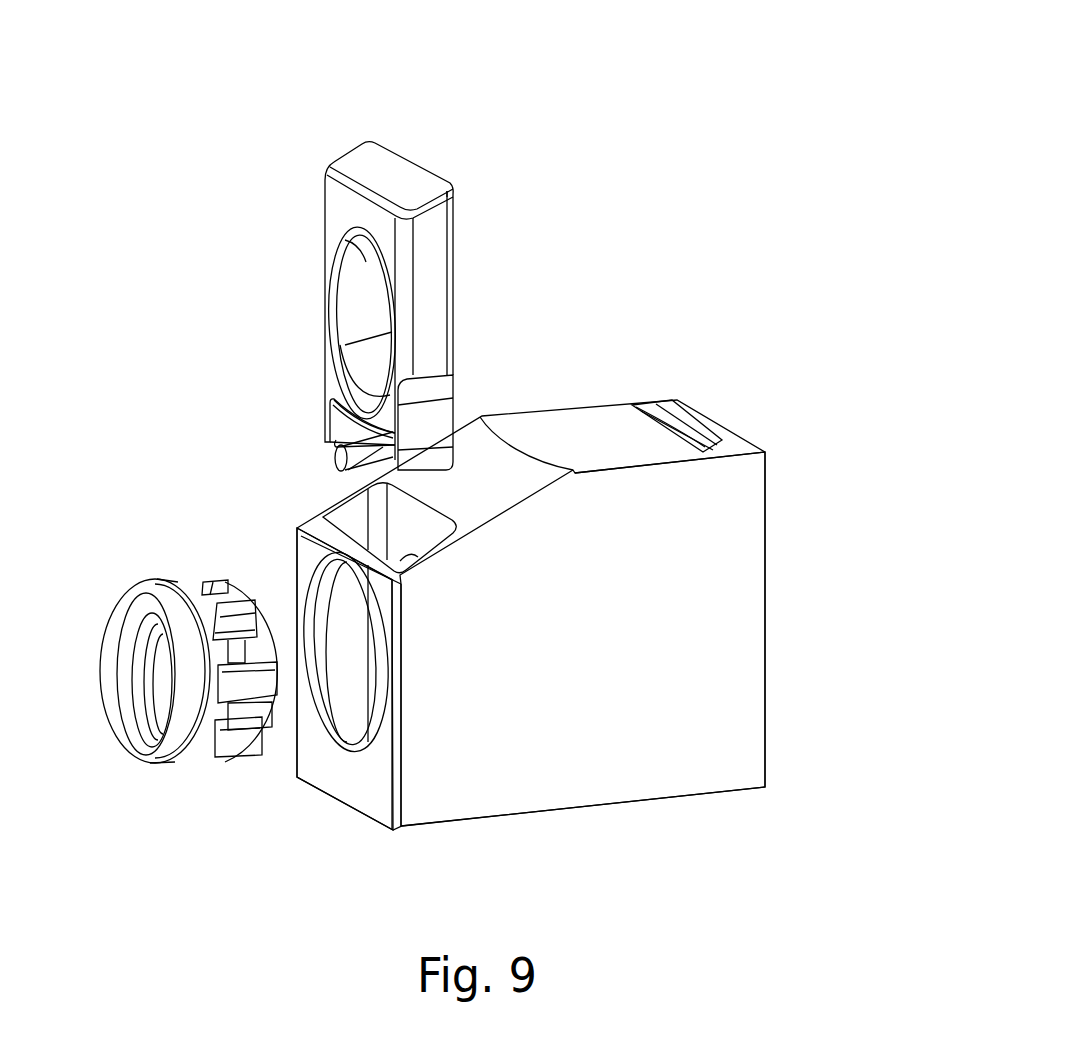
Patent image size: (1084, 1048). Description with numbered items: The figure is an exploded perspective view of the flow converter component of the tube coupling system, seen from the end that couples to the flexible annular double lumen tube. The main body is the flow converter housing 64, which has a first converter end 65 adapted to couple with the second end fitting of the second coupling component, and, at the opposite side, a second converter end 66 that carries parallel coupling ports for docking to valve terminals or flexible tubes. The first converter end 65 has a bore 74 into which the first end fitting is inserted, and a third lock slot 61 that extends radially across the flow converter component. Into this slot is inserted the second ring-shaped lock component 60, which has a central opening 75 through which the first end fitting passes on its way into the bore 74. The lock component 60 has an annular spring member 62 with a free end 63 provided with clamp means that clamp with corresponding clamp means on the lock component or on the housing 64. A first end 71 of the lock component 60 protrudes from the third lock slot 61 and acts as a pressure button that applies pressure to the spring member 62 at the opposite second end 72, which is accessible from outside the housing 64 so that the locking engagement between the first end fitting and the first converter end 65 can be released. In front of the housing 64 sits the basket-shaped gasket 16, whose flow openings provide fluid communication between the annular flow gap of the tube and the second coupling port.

The basket-shaped gasket 16 is at (115, 560).
The second ring-shaped lock component 60 is at (249, 298).
The third lock slot 61 is at (437, 527).
The annular spring member 62 is at (368, 467).
The free end 63 is at (336, 460).
The flow converter housing 64 is at (728, 594).
The first converter end 65 is at (356, 783).
The second converter end 66 is at (771, 713).
The first end 71 is at (387, 160).
The opposite second end 72 is at (330, 426).
The bore 74 is at (377, 673).
The central opening 75 is at (352, 313).